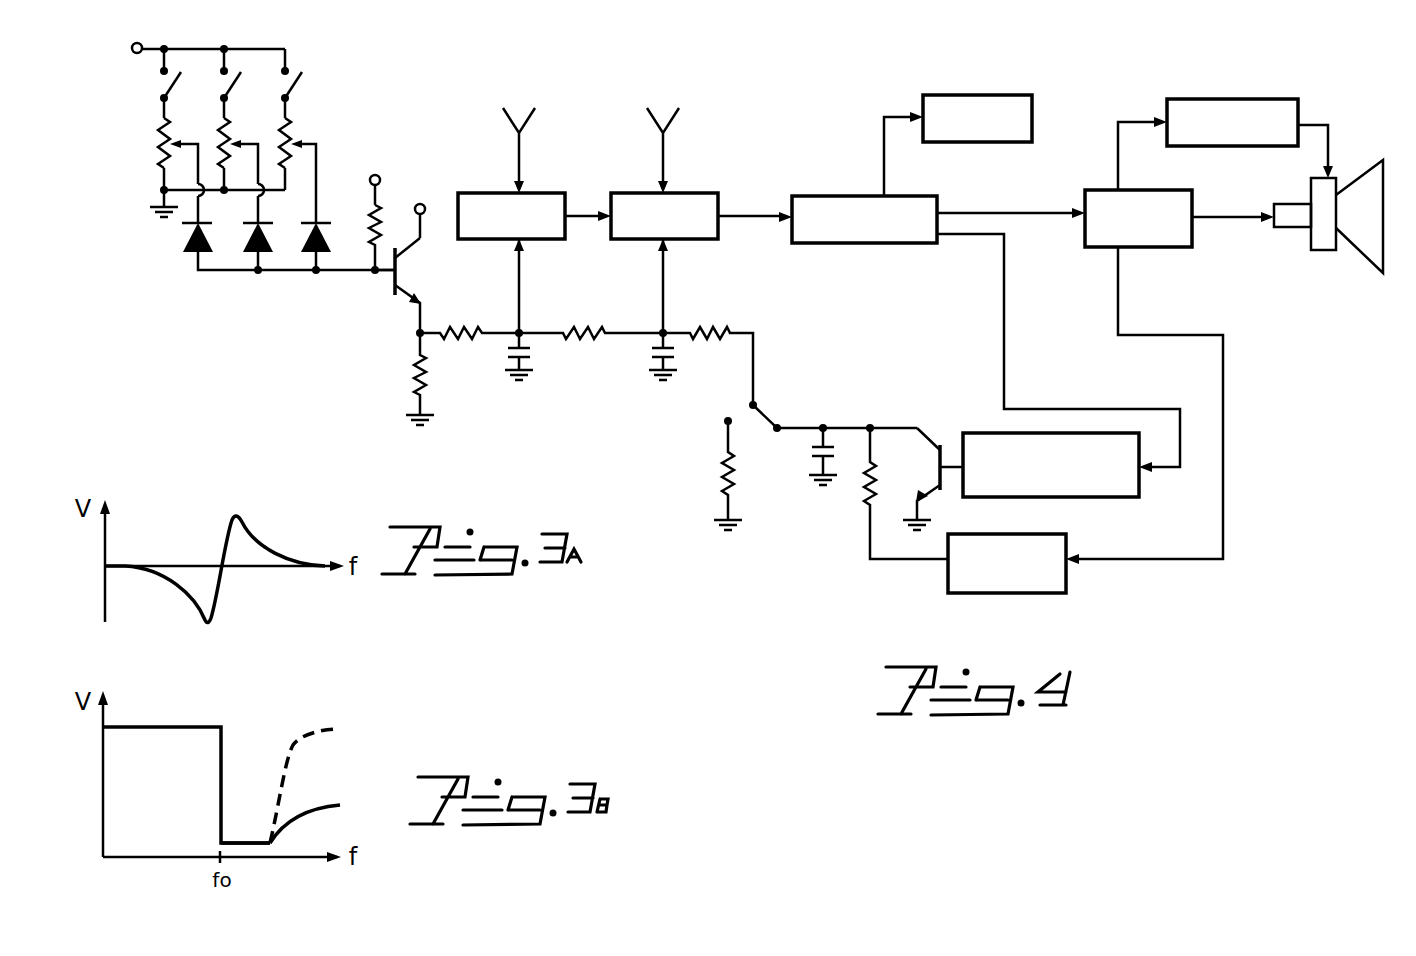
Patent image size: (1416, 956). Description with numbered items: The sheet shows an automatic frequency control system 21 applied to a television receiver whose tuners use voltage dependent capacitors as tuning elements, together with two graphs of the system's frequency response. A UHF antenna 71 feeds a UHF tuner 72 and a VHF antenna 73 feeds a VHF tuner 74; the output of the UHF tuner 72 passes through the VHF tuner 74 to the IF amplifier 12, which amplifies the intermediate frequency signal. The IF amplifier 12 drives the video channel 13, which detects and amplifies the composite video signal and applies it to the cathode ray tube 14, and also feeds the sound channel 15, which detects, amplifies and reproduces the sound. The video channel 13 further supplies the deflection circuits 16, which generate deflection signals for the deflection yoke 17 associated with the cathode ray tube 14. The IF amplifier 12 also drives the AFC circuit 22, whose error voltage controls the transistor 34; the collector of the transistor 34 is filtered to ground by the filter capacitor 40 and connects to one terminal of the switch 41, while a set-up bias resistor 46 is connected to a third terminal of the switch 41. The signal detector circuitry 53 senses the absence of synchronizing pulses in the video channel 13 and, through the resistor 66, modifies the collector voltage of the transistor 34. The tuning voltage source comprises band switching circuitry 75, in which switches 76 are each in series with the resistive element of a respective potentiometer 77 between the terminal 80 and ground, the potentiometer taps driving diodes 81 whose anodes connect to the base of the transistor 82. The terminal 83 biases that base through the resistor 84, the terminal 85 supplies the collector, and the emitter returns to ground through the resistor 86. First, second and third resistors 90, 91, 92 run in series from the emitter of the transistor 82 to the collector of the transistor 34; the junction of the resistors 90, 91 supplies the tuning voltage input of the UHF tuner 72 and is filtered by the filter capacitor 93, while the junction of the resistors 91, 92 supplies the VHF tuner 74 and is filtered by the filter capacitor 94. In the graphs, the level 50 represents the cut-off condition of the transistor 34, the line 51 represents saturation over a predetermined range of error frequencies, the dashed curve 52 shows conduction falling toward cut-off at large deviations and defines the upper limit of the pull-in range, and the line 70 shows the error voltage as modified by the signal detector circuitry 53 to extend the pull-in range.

In FIG. 4, the IF amplifier 12 is at (898, 196).
In FIG. 4, the video channel 13 is at (1178, 190).
In FIG. 4, the cathode ray tube 14 is at (1289, 239).
In FIG. 4, the sound channel 15 is at (985, 95).
In FIG. 4, the deflection circuits 16 is at (1245, 99).
In FIG. 4, the deflection yoke 17 is at (1325, 251).
In FIG. 4, the automatic frequency control system 21 is at (1050, 394).
In FIG. 4, the AFC circuit 22 is at (976, 432).
In FIG. 4, the transistor 34 is at (927, 486).
In FIG. 4, the filter capacitor 40 is at (814, 450).
In FIG. 4, the switch 41 is at (782, 408).
In FIG. 4, the resistor 46 is at (722, 474).
In FIG. 3B, the level 50 is at (158, 726).
In FIG. 3B, the level 51 is at (247, 840).
In FIG. 3B, the dashed curve 52 is at (290, 758).
In FIG. 4, the signal detector circuitry 53 is at (1048, 594).
In FIG. 4, the resistor 66 is at (866, 506).
In FIG. 3B, the line 70 is at (293, 815).
In FIG. 4, the UHF antenna 71 is at (527, 120).
In FIG. 4, the UHF tuner 72 is at (540, 192).
In FIG. 4, the VHF antenna 73 is at (671, 120).
In FIG. 4, the VHF tuner 74 is at (683, 192).
In FIG. 4, the band switching circuitry 75 is at (226, 141).
In FIG. 4, the switches 76 is at (150, 91).
In FIG. 4, the potentiometer 77 is at (146, 159).
In FIG. 4, the terminal 80 is at (142, 44).
In FIG. 4, the diodes 81 is at (165, 249).
In FIG. 4, the transistor 82 is at (407, 286).
In FIG. 4, the terminal 83 is at (381, 183).
In FIG. 4, the resistor 84 is at (372, 220).
In FIG. 4, the terminal 85 is at (425, 211).
In FIG. 4, the resistor 86 is at (426, 376).
In FIG. 4, the first resistor 90 is at (470, 329).
In FIG. 4, the second resistor 91 is at (594, 329).
In FIG. 4, the third resistor 92 is at (720, 329).
In FIG. 4, the filter capacitor 93 is at (531, 352).
In FIG. 4, the filter capacitor 94 is at (675, 352).